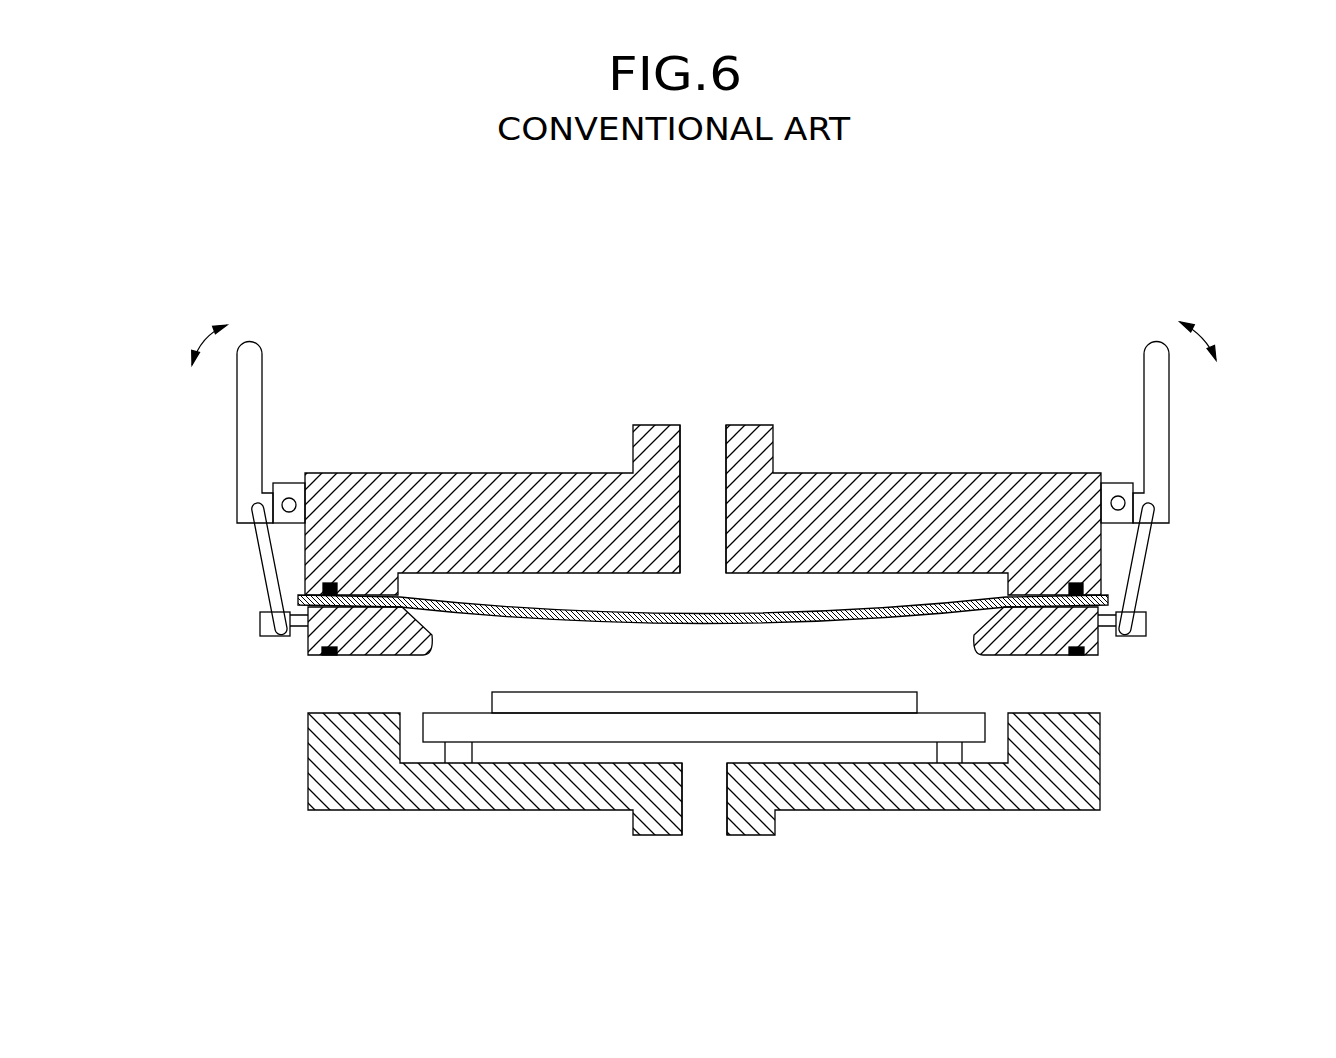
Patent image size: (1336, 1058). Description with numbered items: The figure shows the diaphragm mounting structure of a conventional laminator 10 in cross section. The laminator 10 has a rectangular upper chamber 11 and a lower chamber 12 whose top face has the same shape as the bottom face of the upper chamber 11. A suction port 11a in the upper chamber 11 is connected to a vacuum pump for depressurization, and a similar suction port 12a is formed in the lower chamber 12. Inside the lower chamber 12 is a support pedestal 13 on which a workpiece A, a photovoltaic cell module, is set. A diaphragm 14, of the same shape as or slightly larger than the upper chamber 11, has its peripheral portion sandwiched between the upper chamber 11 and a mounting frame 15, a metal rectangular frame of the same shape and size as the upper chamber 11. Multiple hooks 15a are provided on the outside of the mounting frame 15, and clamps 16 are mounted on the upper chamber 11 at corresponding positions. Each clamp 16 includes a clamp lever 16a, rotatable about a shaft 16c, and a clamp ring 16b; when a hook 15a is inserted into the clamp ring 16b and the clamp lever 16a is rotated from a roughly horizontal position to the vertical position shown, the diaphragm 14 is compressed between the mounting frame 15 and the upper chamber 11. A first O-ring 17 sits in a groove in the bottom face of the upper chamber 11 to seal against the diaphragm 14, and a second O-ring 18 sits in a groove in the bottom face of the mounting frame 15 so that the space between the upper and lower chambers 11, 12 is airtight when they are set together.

The laminator 10 is at (624, 338).
The upper chamber 11 is at (918, 476).
The suction port 11a is at (703, 428).
The lower chamber 12 is at (486, 793).
The suction port 12a is at (705, 818).
The support pedestal 13 is at (800, 730).
The diaphragm 14 is at (833, 620).
The mounting frame 15 is at (306, 638).
The hook 15a is at (261, 622).
The clamp 16 is at (700, 416).
The clamp lever 16a is at (245, 415).
The clamp ring 16b is at (265, 548).
The shaft 16c is at (289, 497).
The first O-ring 17 is at (330, 583).
The second O-ring 18 is at (323, 658).
The workpiece A is at (637, 698).